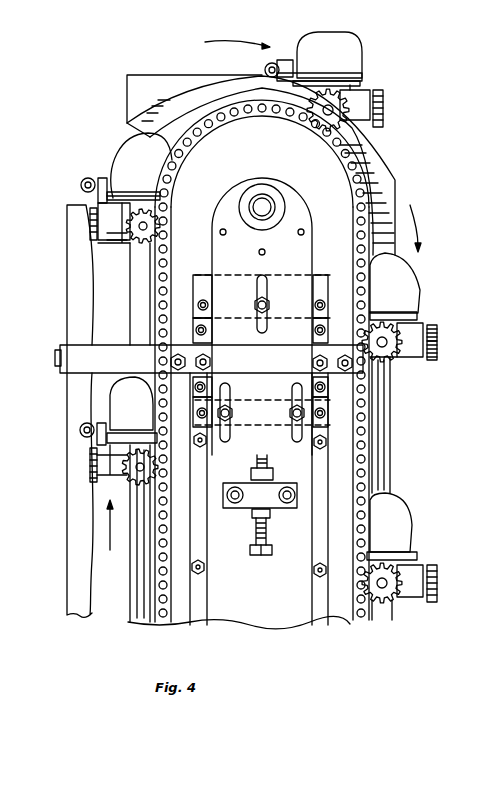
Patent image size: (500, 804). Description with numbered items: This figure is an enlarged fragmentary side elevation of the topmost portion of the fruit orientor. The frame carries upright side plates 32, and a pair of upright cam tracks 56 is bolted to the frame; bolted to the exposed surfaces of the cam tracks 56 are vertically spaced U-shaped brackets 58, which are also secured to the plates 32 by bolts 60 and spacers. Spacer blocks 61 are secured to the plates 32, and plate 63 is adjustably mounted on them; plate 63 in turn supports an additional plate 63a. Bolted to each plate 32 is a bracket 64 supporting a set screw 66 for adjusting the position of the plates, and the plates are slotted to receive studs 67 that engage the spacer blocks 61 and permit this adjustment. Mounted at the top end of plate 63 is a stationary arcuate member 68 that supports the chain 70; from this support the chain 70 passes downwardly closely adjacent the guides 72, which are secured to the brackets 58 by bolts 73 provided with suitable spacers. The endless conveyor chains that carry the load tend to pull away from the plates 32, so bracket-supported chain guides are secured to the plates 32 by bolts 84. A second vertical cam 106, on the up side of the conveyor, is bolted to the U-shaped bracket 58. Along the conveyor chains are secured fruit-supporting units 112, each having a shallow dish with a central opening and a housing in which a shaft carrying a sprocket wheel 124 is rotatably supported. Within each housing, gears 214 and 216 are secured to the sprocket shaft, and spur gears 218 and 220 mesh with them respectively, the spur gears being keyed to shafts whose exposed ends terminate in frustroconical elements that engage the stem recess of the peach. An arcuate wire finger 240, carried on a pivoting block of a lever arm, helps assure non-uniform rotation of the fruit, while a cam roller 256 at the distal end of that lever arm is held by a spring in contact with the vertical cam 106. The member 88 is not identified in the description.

The upright side plates 32 is at (252, 593).
The upright cam tracks 56 is at (386, 430).
The U-shaped brackets 58 is at (66, 352).
The bolts 60 is at (208, 360).
The spacer blocks 61 is at (243, 276).
The plate 63 is at (311, 213).
The additional plate 63a is at (126, 94).
The bracket 64 is at (278, 507).
The set screw 66 is at (258, 530).
The studs 67 is at (268, 306).
The stationary arcuate member 68 is at (274, 158).
The chain 70 is at (372, 160).
The guides 72 is at (186, 622).
The bolts 73 is at (170, 362).
The bolts 84 is at (315, 332).
The guide belt 88 is at (190, 82).
The second vertical cam 106 is at (74, 397).
The fruit-supporting units 112 is at (102, 172).
The sprocket wheel 124 is at (337, 118).
The gear 214 is at (96, 241).
The gear 216 is at (437, 354).
The spur gear 218 is at (75, 210).
The spur gear 220 is at (439, 333).
The arcuate wire finger 240 is at (356, 76).
The cam roller 256 is at (80, 185).